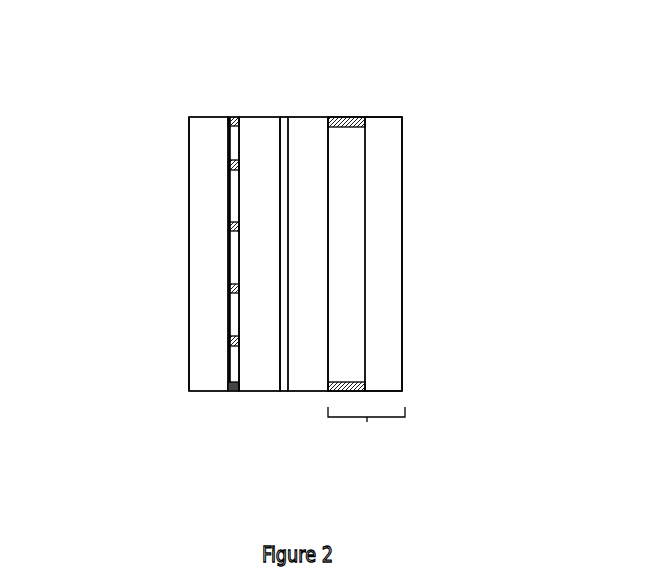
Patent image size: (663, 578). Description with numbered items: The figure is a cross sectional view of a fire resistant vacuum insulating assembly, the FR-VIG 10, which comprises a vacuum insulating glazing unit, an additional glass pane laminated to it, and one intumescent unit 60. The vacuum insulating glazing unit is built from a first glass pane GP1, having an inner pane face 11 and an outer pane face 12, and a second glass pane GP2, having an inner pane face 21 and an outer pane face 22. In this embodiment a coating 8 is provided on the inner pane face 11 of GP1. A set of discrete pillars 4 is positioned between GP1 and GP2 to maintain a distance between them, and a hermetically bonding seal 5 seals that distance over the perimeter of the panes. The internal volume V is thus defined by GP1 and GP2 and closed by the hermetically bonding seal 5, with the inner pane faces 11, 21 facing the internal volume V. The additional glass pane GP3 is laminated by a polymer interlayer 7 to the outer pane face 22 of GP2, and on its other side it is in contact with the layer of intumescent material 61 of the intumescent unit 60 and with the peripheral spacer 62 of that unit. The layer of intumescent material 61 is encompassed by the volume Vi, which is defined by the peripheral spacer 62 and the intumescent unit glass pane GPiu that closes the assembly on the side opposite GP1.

The FR-VIG 10 is at (247, 66).
The first glass pane GP1 is at (208, 145).
The second glass pane GP2 is at (257, 158).
The additional glass pane GP3 is at (308, 137).
The intumescent unit glass pane GPiu is at (388, 250).
The inner pane face 11 is at (228, 189).
The outer pane face 12 is at (190, 238).
The discrete pillars 4 is at (230, 225).
The hermetically bonding seal 5 is at (238, 122).
The polymer interlayer 7 is at (286, 128).
The coating 8 is at (228, 363).
The internal volume V is at (235, 303).
The inner pane face 21 is at (238, 193).
The outer pane face 22 is at (280, 222).
The intumescent unit 60 is at (368, 423).
The layer of intumescent material 61 is at (347, 292).
The peripheral spacer 62 is at (362, 385).
The intumescent unit volume Vi is at (343, 337).